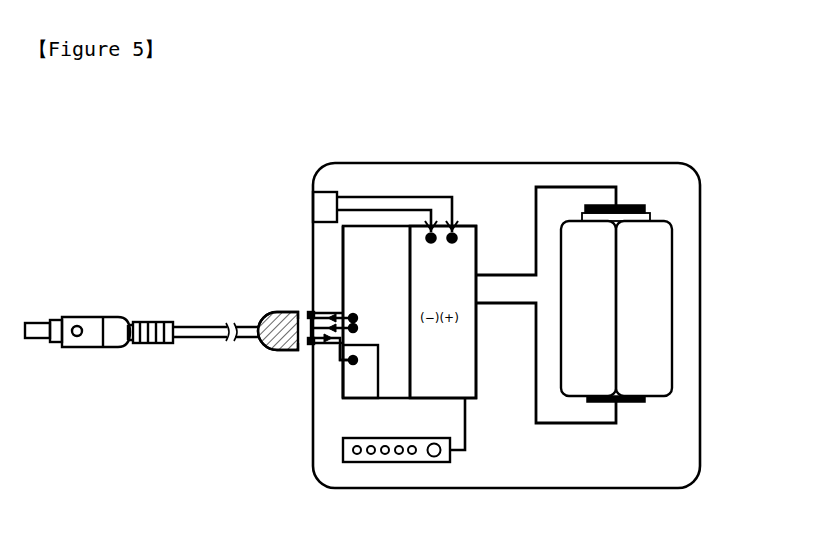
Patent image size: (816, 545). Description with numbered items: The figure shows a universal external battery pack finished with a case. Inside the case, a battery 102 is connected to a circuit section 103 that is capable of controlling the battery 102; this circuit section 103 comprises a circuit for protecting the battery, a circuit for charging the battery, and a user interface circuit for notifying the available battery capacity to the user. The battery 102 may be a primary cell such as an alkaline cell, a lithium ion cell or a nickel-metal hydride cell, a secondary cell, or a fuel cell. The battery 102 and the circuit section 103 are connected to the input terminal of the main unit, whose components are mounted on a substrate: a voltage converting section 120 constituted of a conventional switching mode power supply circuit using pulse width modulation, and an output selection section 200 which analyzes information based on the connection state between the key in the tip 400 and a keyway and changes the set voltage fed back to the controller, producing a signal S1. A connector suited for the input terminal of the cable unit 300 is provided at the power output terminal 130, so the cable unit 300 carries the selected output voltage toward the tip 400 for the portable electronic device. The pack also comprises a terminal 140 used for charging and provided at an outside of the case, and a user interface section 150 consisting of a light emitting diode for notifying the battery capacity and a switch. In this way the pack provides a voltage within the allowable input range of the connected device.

The element case is at (410, 163).
The terminal used for charging 140 is at (318, 210).
The element substrate is at (343, 257).
The voltage converting section 120 is at (409, 312).
The circuit section 103 is at (443, 312).
The battery 102 is at (616, 303).
The output selection section 200 is at (360, 371).
The power output terminal 130 is at (325, 313).
The sensing signal S1 is at (357, 356).
The user interface section 150 is at (343, 448).
The cable unit 300 is at (202, 330).
The tip 400 is at (88, 325).